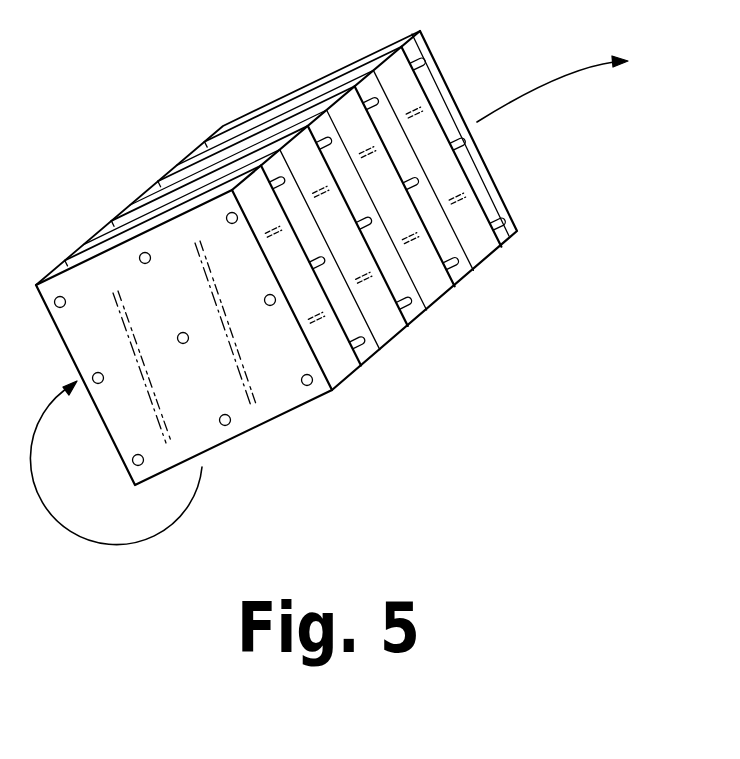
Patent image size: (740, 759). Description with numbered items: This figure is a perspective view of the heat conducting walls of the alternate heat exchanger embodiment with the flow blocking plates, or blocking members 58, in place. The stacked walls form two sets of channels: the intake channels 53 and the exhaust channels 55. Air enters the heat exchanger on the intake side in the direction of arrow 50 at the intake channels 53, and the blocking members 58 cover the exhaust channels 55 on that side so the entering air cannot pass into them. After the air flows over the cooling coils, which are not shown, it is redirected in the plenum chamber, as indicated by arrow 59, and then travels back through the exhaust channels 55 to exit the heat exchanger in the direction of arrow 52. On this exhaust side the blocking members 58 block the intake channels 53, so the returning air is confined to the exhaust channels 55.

The arrow 50 is at (277, 255).
The arrow 52 is at (552, 89).
The intake channels 53 is at (273, 107).
The exhaust channels 55 is at (462, 272).
The blocking members 58 is at (135, 230).
The arrow 59 is at (202, 467).